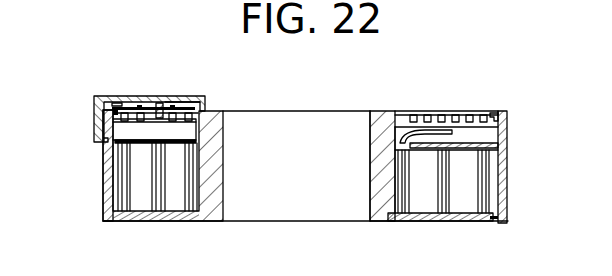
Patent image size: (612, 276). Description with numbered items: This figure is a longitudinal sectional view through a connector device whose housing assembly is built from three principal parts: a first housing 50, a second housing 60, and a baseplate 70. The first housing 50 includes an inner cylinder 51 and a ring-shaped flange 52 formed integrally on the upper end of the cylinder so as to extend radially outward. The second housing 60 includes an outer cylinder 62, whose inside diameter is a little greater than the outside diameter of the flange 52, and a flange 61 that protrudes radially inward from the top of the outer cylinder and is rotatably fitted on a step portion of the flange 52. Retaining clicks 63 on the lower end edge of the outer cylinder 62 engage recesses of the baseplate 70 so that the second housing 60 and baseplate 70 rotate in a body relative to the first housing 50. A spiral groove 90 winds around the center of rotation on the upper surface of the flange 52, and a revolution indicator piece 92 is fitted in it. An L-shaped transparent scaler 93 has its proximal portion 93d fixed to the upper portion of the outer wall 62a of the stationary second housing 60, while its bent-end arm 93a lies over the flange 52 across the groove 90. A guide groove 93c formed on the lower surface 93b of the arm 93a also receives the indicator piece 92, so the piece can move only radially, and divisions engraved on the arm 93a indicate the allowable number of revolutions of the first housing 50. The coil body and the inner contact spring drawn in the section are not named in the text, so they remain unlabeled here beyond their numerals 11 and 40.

The coil 11 is at (457, 198).
The contact spring 40 is at (472, 137).
The first housing 50 is at (409, 159).
The inner cylinder 51 is at (380, 172).
The flange 52 is at (384, 135).
The second housing 60 is at (543, 174).
The flange 61 is at (499, 113).
The outer cylinder 62 is at (508, 190).
The outer wall 62a is at (96, 114).
The retaining clicks 63 is at (498, 226).
The baseplate 70 is at (416, 224).
The spiral groove 90 is at (190, 102).
The revolution indicator piece 92 is at (157, 102).
The scaler 93 is at (102, 97).
The bent-end arm 93a is at (172, 96).
The lower surface 93b is at (118, 103).
The guide groove 93c is at (113, 106).
The proximal portion 93d is at (94, 128).